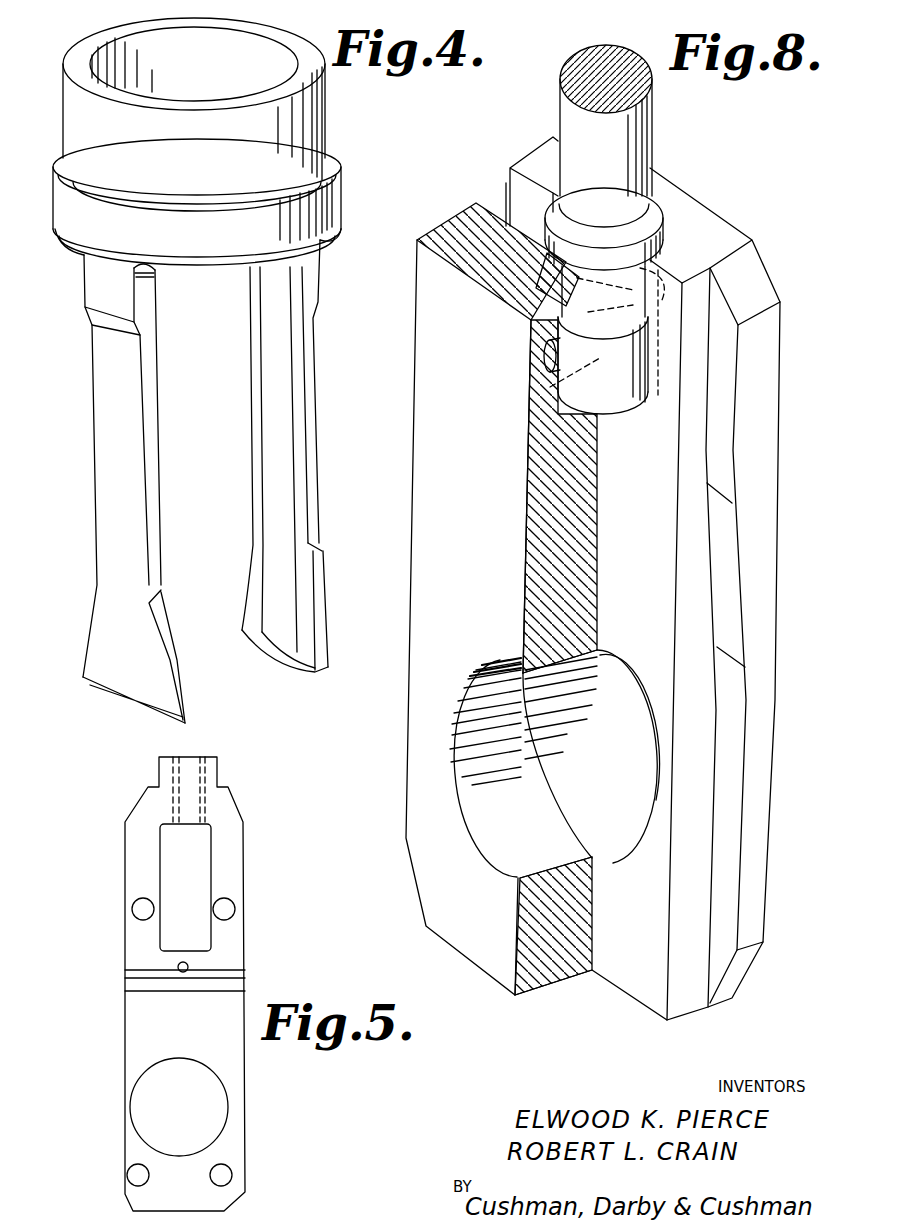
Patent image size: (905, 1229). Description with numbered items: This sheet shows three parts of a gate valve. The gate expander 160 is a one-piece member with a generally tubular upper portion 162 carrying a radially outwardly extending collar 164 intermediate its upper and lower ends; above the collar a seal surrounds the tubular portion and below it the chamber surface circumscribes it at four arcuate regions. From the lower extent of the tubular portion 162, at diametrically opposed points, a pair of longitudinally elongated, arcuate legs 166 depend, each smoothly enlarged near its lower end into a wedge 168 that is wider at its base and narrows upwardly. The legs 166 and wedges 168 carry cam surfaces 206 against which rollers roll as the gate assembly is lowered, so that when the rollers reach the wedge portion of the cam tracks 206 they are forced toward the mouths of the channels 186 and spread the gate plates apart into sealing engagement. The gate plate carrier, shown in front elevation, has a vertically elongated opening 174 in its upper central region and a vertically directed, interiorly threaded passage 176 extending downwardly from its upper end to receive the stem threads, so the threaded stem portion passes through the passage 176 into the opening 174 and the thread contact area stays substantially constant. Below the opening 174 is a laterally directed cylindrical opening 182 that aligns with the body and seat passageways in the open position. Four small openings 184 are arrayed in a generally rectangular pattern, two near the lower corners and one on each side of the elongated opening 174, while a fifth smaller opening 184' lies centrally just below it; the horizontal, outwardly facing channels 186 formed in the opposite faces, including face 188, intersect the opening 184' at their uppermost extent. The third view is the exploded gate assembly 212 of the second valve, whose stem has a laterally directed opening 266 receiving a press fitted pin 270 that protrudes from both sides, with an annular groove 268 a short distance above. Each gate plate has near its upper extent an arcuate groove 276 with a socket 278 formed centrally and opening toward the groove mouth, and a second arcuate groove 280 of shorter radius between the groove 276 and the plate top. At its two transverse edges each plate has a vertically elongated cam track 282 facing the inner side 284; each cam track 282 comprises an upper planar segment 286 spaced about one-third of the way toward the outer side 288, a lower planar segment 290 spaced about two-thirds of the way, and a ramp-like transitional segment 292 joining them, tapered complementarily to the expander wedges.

In FIG. 4, the gate expander 160 is at (84, 460).
In FIG. 4, the tubular upper portion 162 is at (320, 128).
In FIG. 4, the collar 164 is at (338, 184).
In FIG. 4, the legs 166 is at (136, 503).
In FIG. 4, the wedges 168 is at (132, 687).
In FIG. 4, the cam surfaces 206 is at (88, 626).
In FIG. 5, the vertically elongated opening 174 is at (205, 871).
In FIG. 5, the vertically directed passage 176 is at (175, 773).
In FIG. 5, the cylindrical opening 182 is at (213, 1113).
In FIG. 5, the small openings 184 is at (184, 1043).
In FIG. 5, the fifth smaller opening 184' is at (249, 953).
In FIG. 5, the channels 186 is at (229, 987).
In FIG. 5, the face 188 is at (131, 1018).
In FIG. 8, the gate assembly 212 is at (397, 756).
In FIG. 8, the laterally directed opening 266 is at (578, 364).
In FIG. 8, the annular groove 268 is at (659, 253).
In FIG. 8, the pin 270 is at (543, 364).
In FIG. 8, the arcuate groove 276 is at (537, 338).
In FIG. 8, the socket 278 is at (536, 376).
In FIG. 8, the second arcuate groove 280 is at (520, 309).
In FIG. 8, the cam track 282 is at (700, 583).
In FIG. 8, the inner side 284 is at (664, 514).
In FIG. 8, the upper planar segment 286 is at (715, 441).
In FIG. 8, the outer side 288 is at (507, 599).
In FIG. 8, the lower planar segment 290 is at (712, 885).
In FIG. 8, the transitional segment 292 is at (728, 608).